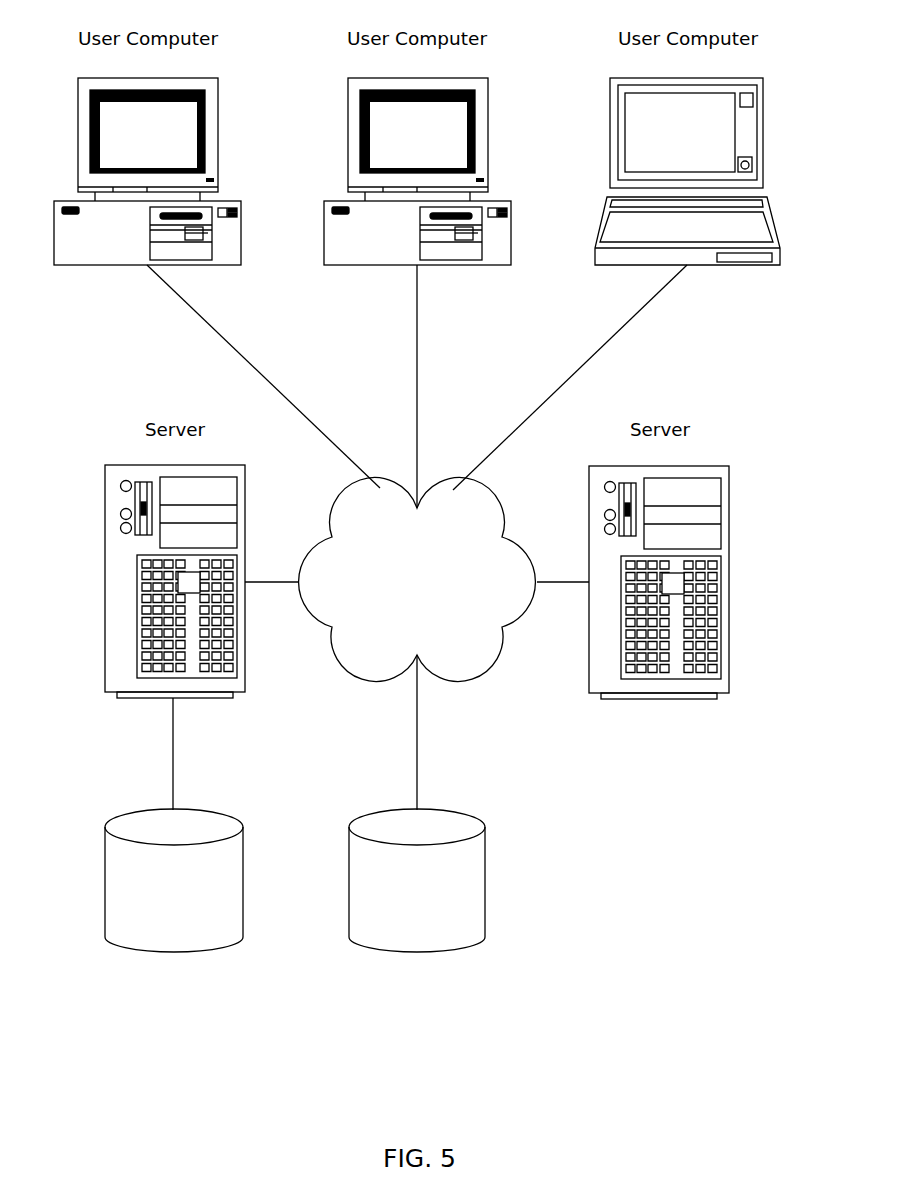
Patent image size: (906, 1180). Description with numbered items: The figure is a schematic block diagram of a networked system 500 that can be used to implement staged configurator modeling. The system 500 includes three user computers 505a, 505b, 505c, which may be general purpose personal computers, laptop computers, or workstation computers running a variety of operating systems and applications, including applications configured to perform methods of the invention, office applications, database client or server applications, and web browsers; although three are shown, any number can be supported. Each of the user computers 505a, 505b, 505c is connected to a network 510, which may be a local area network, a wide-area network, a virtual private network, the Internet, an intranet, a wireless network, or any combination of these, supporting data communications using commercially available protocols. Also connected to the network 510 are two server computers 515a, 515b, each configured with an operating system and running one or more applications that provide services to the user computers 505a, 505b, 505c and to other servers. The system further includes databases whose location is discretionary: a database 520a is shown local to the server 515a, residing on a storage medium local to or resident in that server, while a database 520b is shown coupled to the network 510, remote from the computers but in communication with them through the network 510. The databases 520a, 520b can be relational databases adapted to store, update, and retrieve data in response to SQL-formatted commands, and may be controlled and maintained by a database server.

The system 500 is at (649, 1006).
The user computer 505a is at (242, 219).
The user computer 505b is at (323, 218).
The user computer 505c is at (610, 173).
The network 510 is at (450, 676).
The server computer 515a is at (103, 582).
The server computer 515b is at (729, 582).
The database 520a is at (173, 951).
The database 520b is at (417, 951).